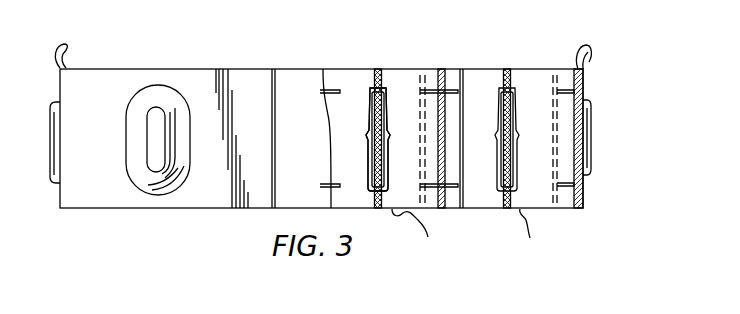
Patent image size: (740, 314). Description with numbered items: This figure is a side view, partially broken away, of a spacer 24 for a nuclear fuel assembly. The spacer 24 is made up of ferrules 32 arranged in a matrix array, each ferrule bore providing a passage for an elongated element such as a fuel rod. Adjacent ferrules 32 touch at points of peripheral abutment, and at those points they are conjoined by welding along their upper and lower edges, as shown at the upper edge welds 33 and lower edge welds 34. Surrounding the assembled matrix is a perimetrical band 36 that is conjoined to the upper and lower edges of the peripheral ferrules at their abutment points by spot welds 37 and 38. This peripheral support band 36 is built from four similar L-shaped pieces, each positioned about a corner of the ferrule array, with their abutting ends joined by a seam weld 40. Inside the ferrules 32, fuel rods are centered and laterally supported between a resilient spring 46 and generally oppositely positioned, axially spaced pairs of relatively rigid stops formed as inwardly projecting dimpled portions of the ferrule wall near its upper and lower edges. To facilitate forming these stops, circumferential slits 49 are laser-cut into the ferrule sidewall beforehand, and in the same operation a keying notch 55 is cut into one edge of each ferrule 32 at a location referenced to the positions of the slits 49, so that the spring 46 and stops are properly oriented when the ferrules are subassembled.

The spacer 24 is at (484, 58).
The ferrule 32 is at (391, 68).
The upper edge weld 33 is at (443, 68).
The lower edge weld 34 is at (536, 60).
The perimetrical band 36 is at (290, 82).
The spot weld 37 is at (575, 68).
The spot weld 38 is at (573, 209).
The seam weld 40 is at (275, 157).
The resilient spring 46 is at (389, 128).
The circumferential slit 49 is at (570, 92).
The keying notch 55 is at (470, 233).